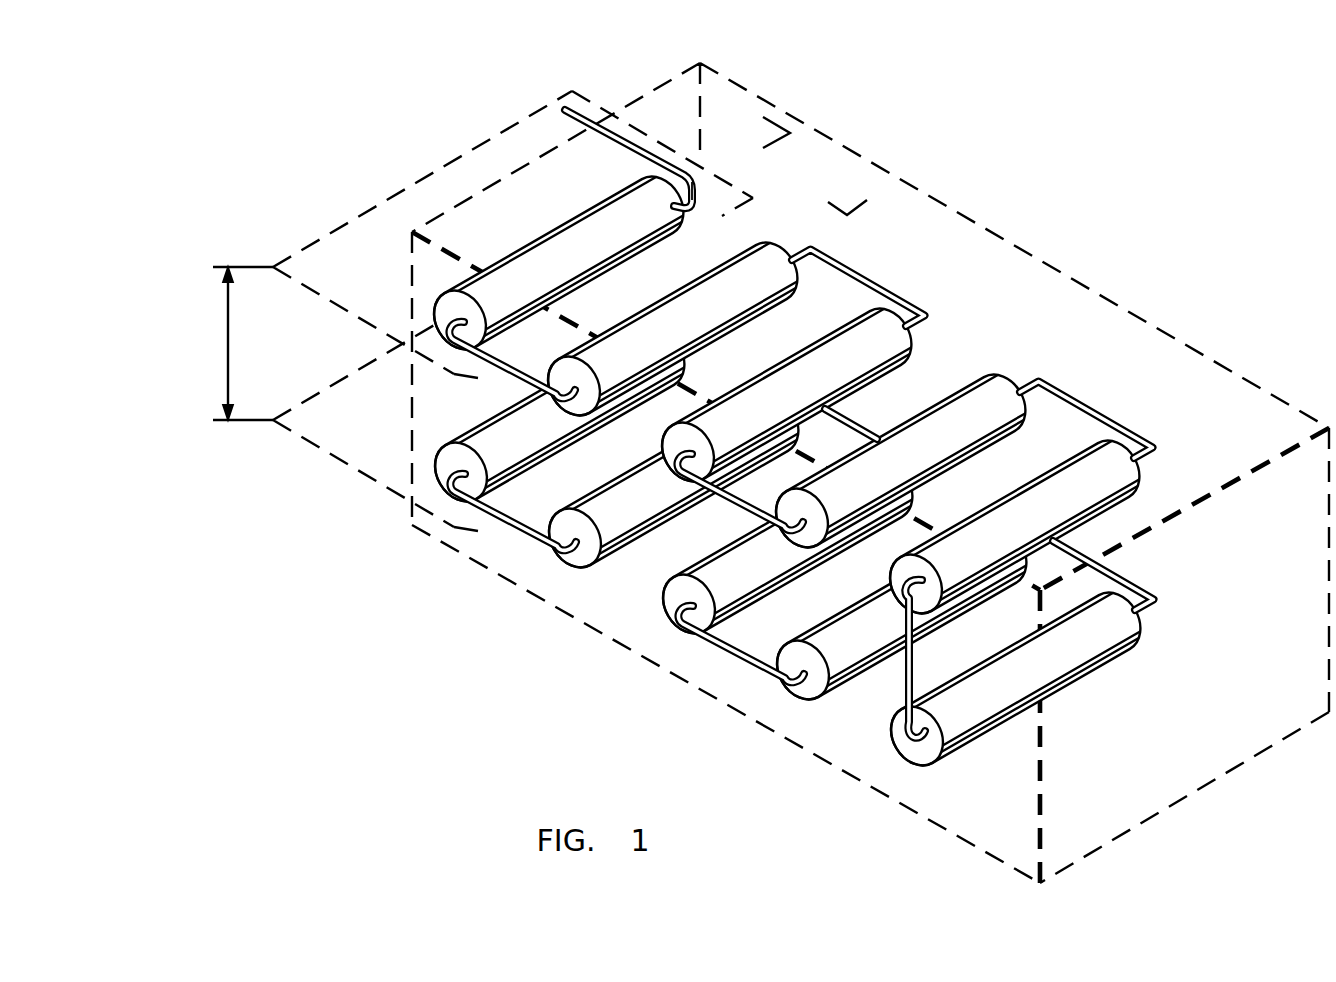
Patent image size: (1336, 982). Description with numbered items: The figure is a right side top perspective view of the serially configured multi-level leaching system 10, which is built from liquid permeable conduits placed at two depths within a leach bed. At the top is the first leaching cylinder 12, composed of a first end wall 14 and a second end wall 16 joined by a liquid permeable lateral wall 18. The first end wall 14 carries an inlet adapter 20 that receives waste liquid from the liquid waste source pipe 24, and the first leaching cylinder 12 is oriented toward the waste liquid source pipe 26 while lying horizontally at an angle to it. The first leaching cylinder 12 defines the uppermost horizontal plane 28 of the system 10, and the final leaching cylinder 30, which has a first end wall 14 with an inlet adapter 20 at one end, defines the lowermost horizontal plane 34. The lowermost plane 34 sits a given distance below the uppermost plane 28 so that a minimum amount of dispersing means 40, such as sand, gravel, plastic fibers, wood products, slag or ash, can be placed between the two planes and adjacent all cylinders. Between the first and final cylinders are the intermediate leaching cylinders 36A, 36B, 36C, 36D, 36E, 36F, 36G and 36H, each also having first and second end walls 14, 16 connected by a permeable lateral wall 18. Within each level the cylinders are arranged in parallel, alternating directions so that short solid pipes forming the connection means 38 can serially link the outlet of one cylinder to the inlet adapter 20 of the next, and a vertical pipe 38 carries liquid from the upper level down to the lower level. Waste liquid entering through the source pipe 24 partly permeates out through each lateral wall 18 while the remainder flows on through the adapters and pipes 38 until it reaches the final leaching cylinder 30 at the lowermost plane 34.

The leaching system 10 is at (749, 466).
The first leaching cylinder 12 is at (559, 263).
The first end wall 14 is at (682, 186).
The second end wall 16 is at (766, 245).
The liquid permeable lateral wall 18 is at (547, 240).
The inlet adapter 20 is at (702, 180).
The liquid waste source pipe 24 is at (570, 102).
The waste liquid source pipe 26 is at (784, 131).
The uppermost horizontal plane 28 is at (306, 408).
The final leaching cylinder 30 is at (503, 446).
The lowermost horizontal plane 34 is at (310, 244).
The intermediate leaching cylinder 36A is at (659, 330).
The intermediate leaching cylinder 36B is at (781, 387).
The intermediate leaching cylinder 36C is at (891, 458).
The intermediate leaching cylinder 36D is at (1010, 522).
The intermediate leaching cylinder 36E is at (967, 698).
The intermediate leaching cylinder 36F is at (836, 641).
The intermediate leaching cylinder 36G is at (716, 580).
The intermediate leaching cylinder 36H is at (605, 508).
The connection means 38 is at (505, 366).
The dispersing means 40 is at (936, 268).